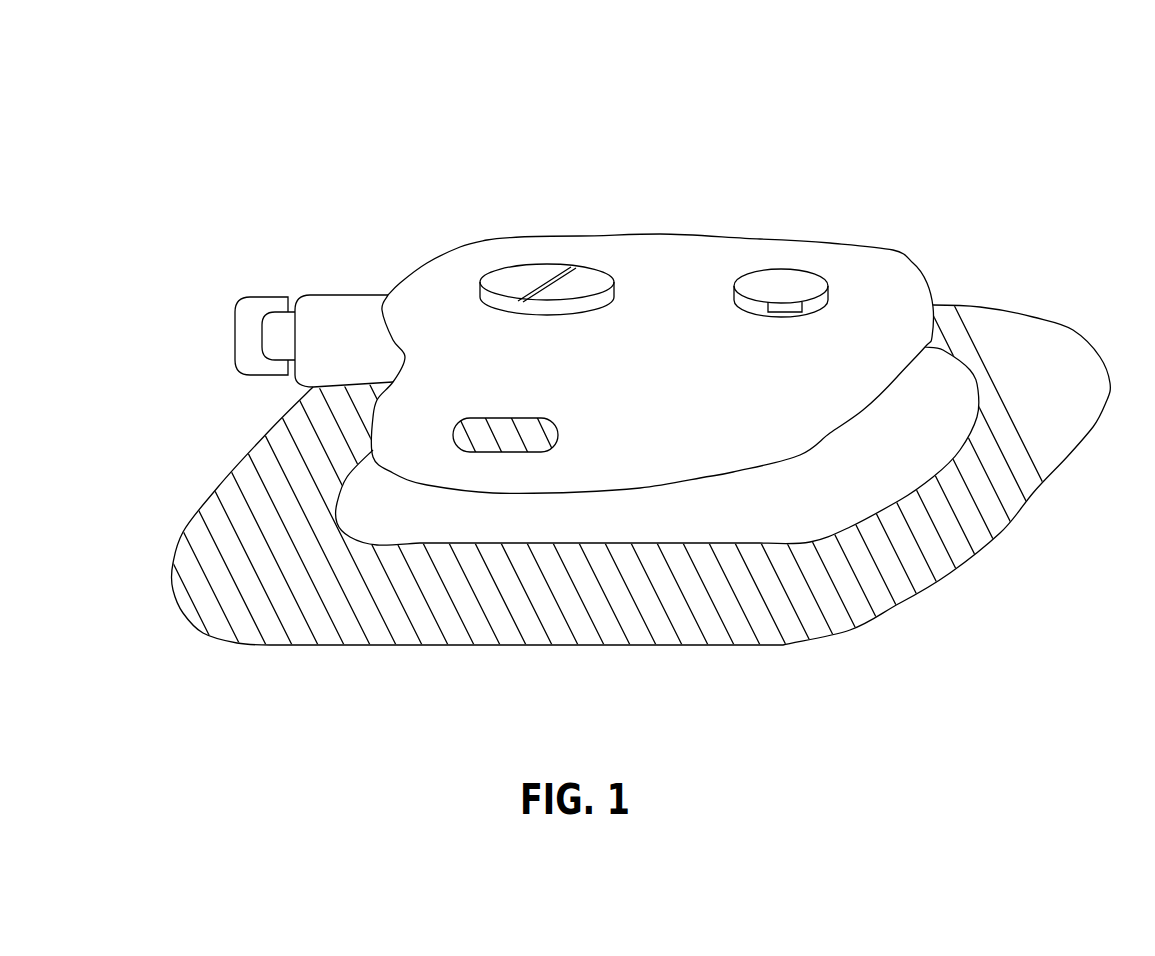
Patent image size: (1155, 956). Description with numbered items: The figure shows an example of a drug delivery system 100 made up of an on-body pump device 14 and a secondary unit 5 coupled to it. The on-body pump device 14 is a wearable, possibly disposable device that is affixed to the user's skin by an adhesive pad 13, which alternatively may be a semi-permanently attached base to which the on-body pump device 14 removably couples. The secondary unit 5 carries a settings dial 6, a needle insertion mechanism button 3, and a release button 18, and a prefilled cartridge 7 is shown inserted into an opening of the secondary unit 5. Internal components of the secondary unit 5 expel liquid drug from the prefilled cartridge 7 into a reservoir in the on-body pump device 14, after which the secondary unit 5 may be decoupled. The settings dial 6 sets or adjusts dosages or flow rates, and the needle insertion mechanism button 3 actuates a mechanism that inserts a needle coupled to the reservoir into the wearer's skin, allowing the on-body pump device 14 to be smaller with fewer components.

The drug delivery system 100 is at (636, 150).
The needle insertion mechanism button 3 is at (788, 248).
The secondary unit 5 is at (895, 250).
The settings dial 6 is at (510, 267).
The prefilled cartridge 7 is at (270, 297).
The adhesive pad 13 is at (1073, 330).
The on-body pump device 14 is at (993, 332).
The release button 18 is at (558, 440).